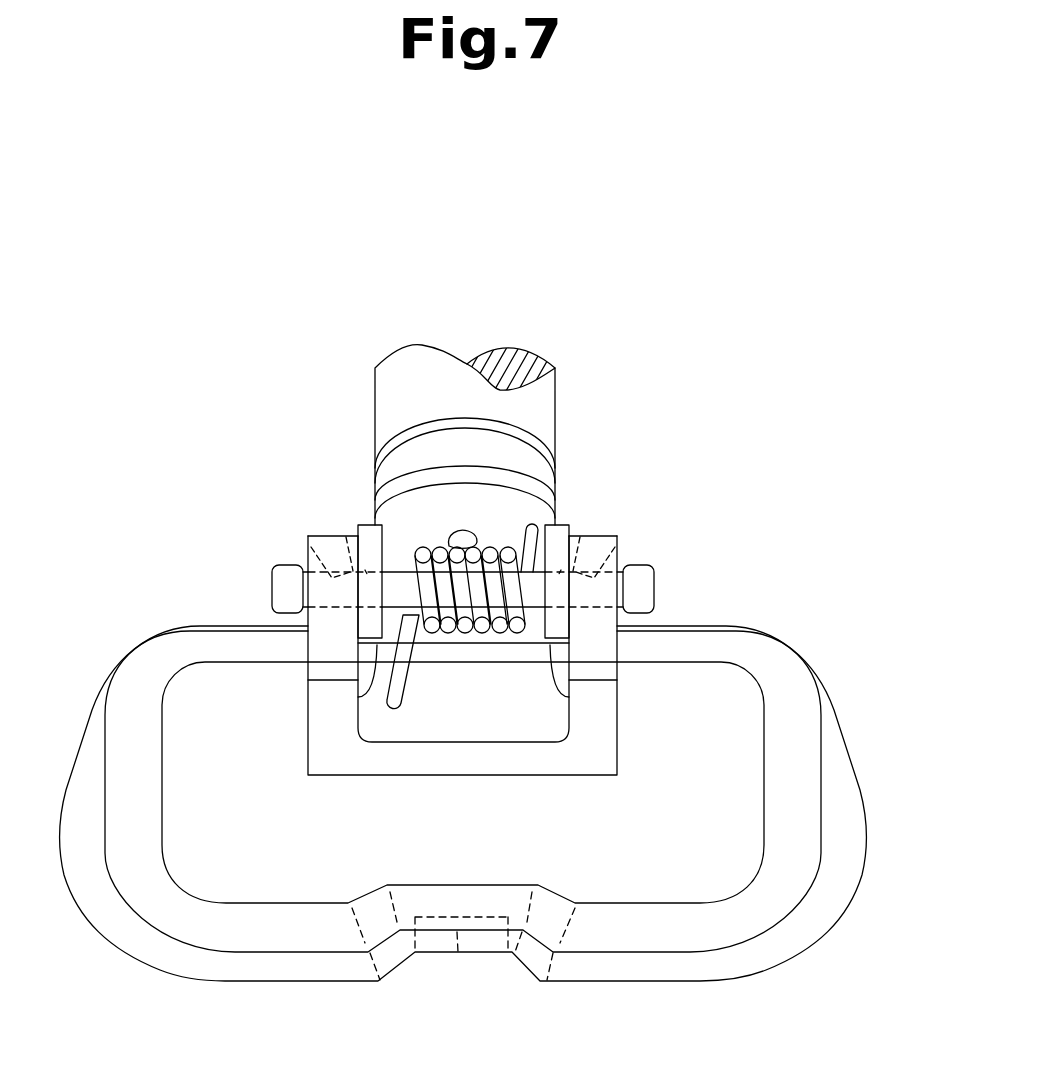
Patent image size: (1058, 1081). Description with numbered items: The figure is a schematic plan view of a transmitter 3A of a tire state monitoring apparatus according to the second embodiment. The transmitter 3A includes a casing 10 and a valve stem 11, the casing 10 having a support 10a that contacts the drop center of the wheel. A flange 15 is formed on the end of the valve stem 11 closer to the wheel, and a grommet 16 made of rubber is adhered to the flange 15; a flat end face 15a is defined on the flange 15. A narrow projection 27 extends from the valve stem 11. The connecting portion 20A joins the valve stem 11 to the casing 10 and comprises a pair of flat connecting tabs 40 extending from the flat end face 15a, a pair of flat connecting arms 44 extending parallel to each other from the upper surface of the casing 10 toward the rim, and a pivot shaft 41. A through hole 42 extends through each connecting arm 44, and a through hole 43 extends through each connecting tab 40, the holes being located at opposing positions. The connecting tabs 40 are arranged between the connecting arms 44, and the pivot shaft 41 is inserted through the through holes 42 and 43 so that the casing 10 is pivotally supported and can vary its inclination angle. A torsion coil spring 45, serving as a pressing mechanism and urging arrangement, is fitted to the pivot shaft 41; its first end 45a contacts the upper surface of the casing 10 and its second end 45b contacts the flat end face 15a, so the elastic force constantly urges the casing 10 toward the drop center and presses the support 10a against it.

The transmitter 3A is at (758, 332).
The casing 10 is at (845, 741).
The support 10a is at (463, 953).
The valve stem 11 is at (555, 394).
The flange 15 is at (393, 496).
The flat end face 15a is at (466, 503).
The grommet 16 is at (532, 437).
The connecting portion 20A is at (194, 481).
The projection 27 is at (453, 534).
The connecting tab 40 is at (358, 697).
The pivot shaft 41 is at (655, 593).
The through hole 42 is at (306, 546).
The through hole 43 is at (340, 528).
The connecting arm 44 is at (307, 648).
The torsion coil spring 45 is at (487, 633).
The first end 45a is at (392, 710).
The second end 45b is at (537, 496).